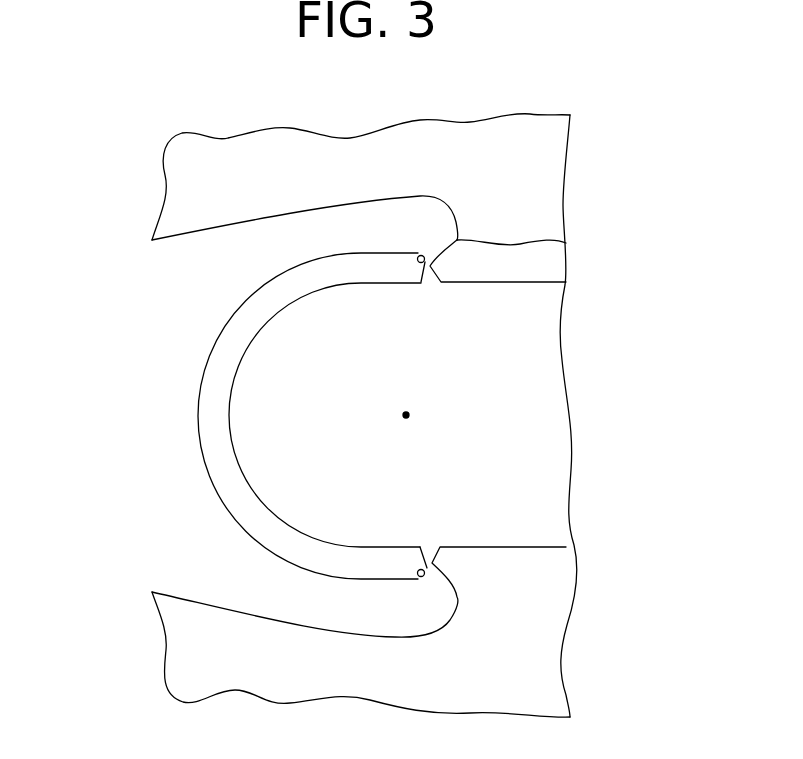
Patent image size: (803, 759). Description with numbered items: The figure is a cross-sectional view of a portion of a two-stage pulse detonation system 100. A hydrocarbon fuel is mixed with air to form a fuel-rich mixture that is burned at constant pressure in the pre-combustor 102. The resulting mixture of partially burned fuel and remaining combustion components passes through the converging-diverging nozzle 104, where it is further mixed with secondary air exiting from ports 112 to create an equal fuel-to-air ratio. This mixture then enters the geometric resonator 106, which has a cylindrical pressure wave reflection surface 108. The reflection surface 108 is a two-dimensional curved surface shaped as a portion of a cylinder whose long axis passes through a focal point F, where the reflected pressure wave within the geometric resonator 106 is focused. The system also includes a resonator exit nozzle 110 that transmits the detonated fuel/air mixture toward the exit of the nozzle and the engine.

The two-stage pulse detonation system 100 is at (322, 118).
The pre-combustor 102 is at (185, 250).
The converging-diverging nozzle 104 is at (540, 241).
The geometric resonator 106 is at (342, 453).
The cylindrical pressure wave reflection surface 108 is at (233, 412).
The resonator exit nozzle 110 is at (560, 587).
The ports 112 is at (430, 583).
The focal point F is at (406, 419).